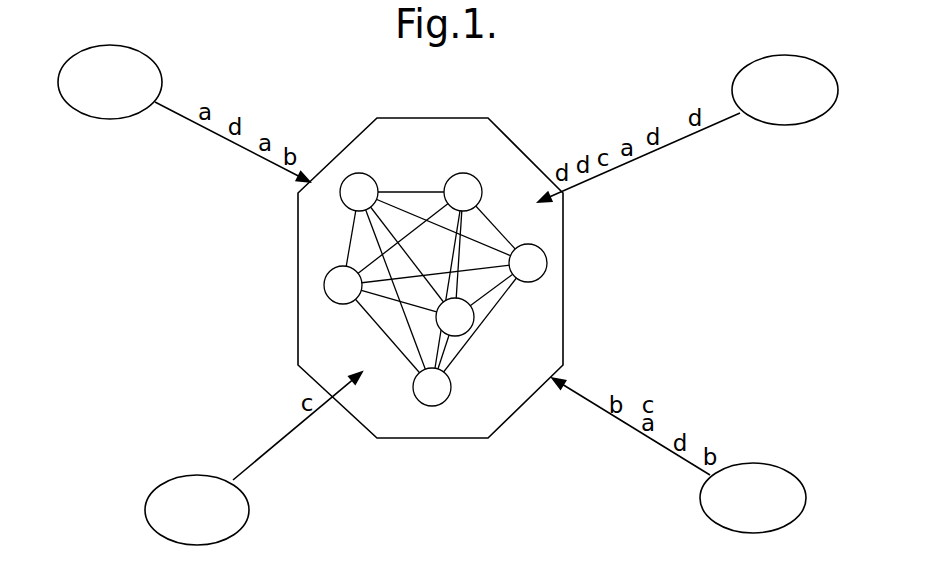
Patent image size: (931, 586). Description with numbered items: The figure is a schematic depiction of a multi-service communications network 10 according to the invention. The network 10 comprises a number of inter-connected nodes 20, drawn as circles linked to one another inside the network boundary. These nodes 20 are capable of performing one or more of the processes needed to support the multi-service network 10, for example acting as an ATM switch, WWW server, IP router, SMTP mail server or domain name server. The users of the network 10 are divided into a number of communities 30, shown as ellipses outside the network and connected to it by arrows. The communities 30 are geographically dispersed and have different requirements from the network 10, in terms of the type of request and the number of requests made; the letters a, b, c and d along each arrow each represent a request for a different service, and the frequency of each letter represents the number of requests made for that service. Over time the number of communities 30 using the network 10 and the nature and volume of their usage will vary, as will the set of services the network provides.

The multi-service communications network 10 is at (426, 137).
The node 20 is at (352, 200).
The community 30 is at (777, 118).